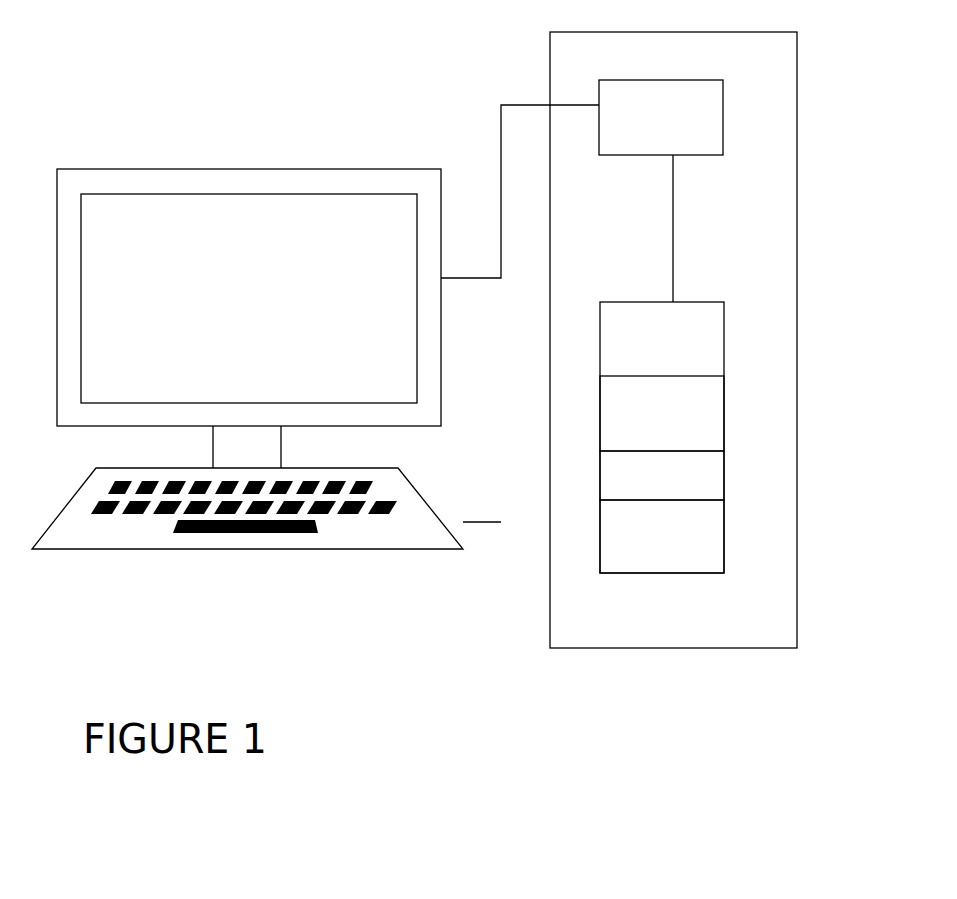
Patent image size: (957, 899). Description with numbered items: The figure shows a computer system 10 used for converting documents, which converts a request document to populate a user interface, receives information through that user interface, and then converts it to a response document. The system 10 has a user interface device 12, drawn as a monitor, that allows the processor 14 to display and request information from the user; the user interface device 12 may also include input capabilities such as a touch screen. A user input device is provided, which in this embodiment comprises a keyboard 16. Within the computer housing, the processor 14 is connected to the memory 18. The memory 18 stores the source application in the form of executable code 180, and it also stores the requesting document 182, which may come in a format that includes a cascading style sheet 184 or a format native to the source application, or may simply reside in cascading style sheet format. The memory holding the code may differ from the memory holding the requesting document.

The computer system 10 is at (159, 91).
The user interface device 12 is at (257, 168).
The processor 14 is at (723, 118).
The keyboard 16 is at (308, 552).
The memory 18 is at (683, 302).
The executable code 180 is at (724, 423).
The requesting document 182 is at (724, 478).
The cascading style sheet 184 is at (724, 552).